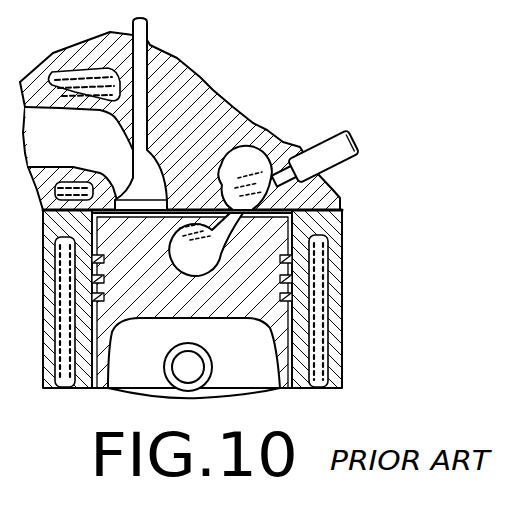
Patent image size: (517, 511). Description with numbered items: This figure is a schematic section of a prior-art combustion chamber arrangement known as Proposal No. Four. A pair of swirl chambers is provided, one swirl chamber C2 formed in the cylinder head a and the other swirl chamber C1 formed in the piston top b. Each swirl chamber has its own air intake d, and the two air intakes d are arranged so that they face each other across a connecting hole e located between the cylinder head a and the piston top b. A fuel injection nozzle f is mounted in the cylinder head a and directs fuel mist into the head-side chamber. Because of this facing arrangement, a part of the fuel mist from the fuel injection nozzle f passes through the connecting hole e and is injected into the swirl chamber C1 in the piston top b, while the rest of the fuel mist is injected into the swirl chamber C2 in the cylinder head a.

The cylinder head a is at (205, 112).
The piston top b is at (295, 222).
The swirl chamber C1 is at (197, 268).
The swirl chamber C2 is at (252, 163).
The air intake d is at (223, 186).
The connecting hole e is at (342, 296).
The fuel injection nozzle f is at (343, 145).